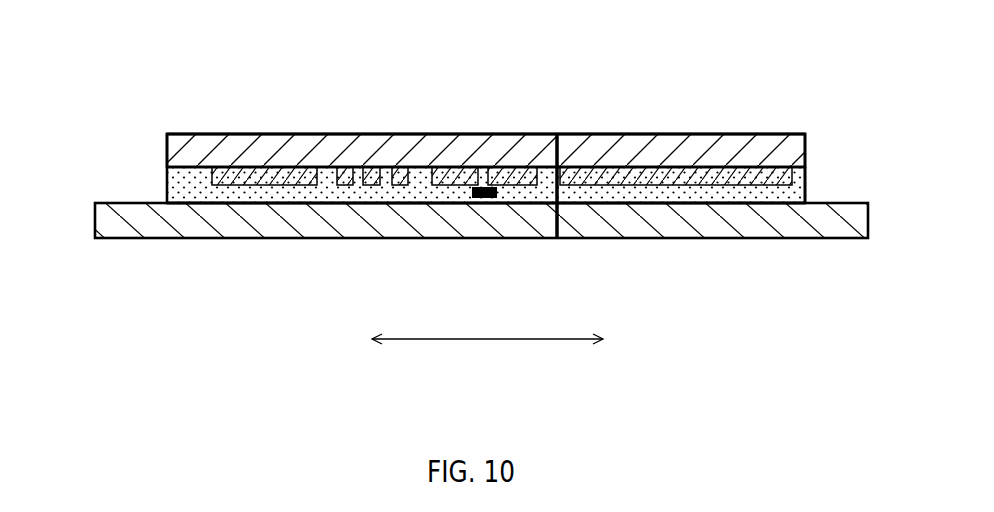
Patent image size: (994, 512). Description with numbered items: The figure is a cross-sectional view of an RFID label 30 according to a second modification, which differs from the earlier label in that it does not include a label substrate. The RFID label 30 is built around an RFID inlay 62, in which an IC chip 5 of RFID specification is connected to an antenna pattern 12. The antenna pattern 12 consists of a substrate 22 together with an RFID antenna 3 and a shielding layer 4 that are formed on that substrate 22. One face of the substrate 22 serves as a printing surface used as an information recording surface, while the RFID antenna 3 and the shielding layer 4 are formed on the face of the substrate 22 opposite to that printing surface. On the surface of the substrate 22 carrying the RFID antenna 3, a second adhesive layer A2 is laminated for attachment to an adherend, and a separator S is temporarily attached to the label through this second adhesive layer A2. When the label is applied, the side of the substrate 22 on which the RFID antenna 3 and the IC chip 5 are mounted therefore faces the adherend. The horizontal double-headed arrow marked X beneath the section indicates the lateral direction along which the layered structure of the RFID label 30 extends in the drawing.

The RFID inlay 62 is at (411, 161).
The antenna pattern 12 is at (434, 149).
The substrate 22 is at (165, 137).
The shielding layer 4 is at (560, 168).
The RFID antenna 3 is at (212, 177).
The IC chip 5 is at (472, 196).
The RFID label 30 is at (553, 98).
The second adhesive layer A2 is at (806, 182).
The separator S is at (870, 212).
The first direction X is at (487, 321).